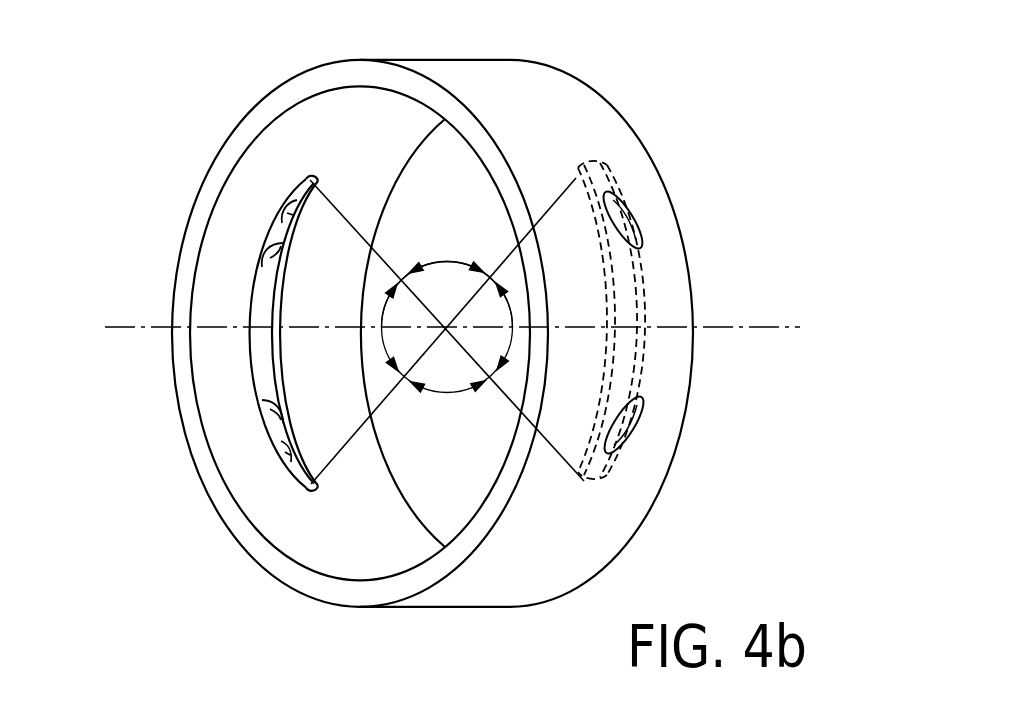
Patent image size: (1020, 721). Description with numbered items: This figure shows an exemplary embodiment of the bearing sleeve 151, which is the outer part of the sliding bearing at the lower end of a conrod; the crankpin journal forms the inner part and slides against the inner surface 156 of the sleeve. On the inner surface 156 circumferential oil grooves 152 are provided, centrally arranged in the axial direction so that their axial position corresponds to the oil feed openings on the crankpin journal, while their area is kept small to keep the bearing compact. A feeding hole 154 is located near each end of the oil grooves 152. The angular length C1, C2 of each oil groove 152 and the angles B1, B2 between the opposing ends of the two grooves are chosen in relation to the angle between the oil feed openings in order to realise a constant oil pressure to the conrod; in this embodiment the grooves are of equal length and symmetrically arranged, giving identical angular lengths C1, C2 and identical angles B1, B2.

The bearing sleeve 151 is at (645, 80).
The oil groove 152 is at (265, 372).
The feeding hole 154 is at (282, 232).
The inner surface 156 is at (347, 523).
The angle between opposing groove ends B1 is at (447, 262).
The angle between opposing groove ends B2 is at (448, 393).
The angular length of oil groove C1 is at (382, 320).
The angular length of oil groove C2 is at (522, 315).